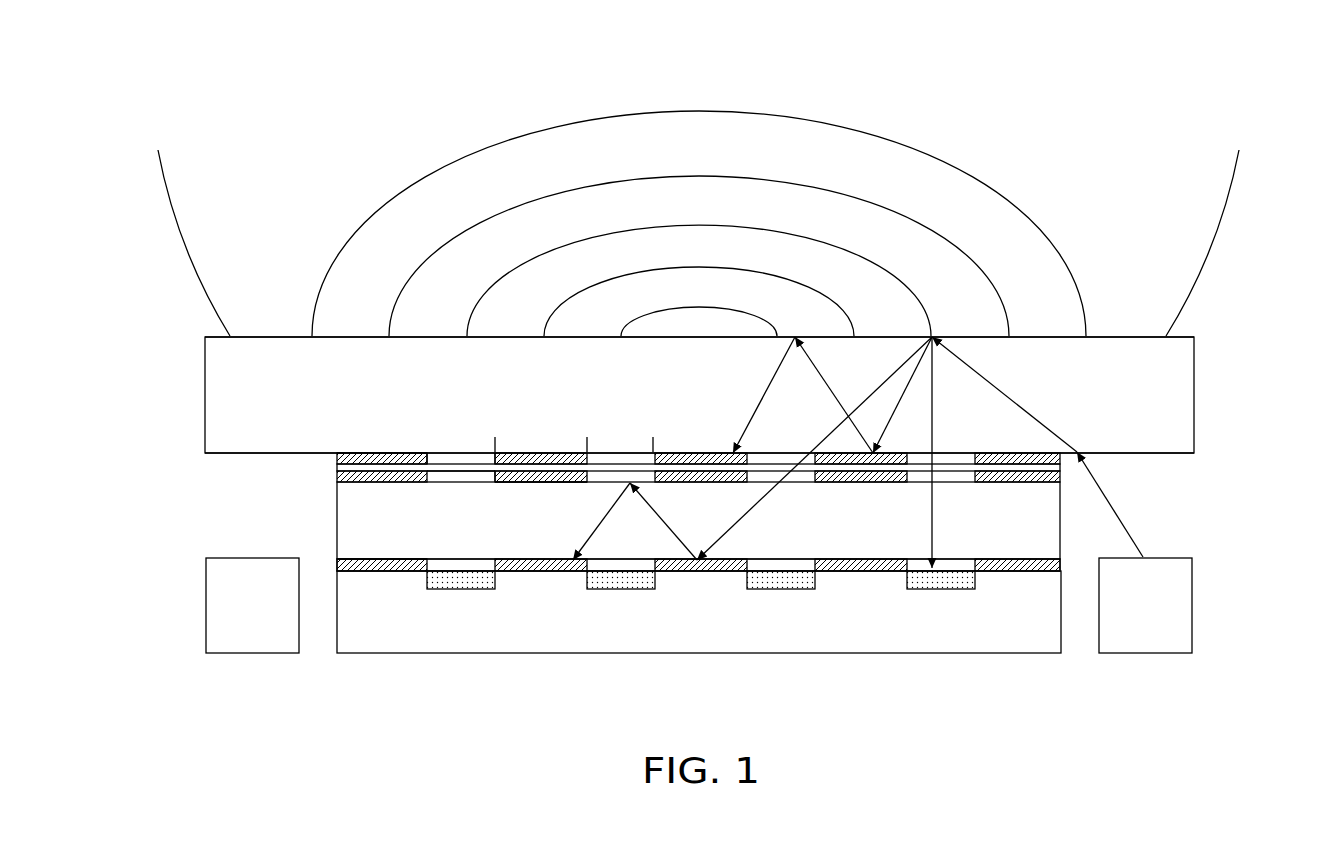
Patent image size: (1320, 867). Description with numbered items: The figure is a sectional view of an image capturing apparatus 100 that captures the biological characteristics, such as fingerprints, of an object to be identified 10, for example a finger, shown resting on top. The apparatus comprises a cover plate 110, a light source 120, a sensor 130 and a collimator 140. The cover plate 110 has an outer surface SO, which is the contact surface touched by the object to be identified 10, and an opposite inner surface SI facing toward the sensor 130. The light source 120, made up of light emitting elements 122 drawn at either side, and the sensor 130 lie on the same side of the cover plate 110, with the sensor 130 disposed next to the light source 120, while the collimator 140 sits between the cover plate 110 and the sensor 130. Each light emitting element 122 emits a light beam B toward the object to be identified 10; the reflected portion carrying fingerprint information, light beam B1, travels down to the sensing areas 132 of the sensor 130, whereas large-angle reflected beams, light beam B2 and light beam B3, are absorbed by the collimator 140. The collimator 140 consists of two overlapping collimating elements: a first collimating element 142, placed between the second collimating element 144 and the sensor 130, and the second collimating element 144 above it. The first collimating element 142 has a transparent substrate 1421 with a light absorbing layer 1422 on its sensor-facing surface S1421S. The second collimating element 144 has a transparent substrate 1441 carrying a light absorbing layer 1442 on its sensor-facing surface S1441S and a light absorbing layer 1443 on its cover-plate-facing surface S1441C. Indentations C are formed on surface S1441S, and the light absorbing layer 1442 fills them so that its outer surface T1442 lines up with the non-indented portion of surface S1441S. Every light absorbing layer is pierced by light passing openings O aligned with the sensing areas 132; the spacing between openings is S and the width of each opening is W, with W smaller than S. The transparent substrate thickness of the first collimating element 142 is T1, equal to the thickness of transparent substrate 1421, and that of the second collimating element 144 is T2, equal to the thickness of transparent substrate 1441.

The object to be identified 10 is at (1198, 280).
The image capturing apparatus 100 is at (1252, 744).
The cover plate 110 is at (1185, 420).
The outer surface SO is at (220, 334).
The inner surface SI is at (208, 456).
The light source 120 is at (699, 605).
The light emitting elements 122 is at (214, 613).
The sensor 130 is at (1000, 640).
The sensing areas 132 is at (941, 589).
The collimator 140 is at (616, 501).
The first collimating element 142 is at (638, 526).
The transparent substrate 1421 is at (340, 535).
The light absorbing layer 1422 is at (338, 567).
The second collimating element 144 is at (638, 468).
The transparent substrate 1441 is at (338, 468).
The light absorbing layer 1442 is at (338, 477).
The light absorbing layer 1443 is at (338, 455).
The surface S1441C is at (397, 455).
The surface S1441S is at (437, 484).
The surface S1421S is at (394, 566).
The light passing openings O is at (453, 565).
The indentations C is at (493, 477).
The spacing S is at (587, 442).
The width W is at (653, 442).
The transparent substrate thickness T1 is at (950, 482).
The transparent substrate thickness T2 is at (950, 482).
The outer surface T1442 is at (537, 484).
The light beam B is at (1113, 507).
The light beam B1 is at (932, 410).
The light beam B2 is at (899, 402).
The light beam B3 is at (878, 388).